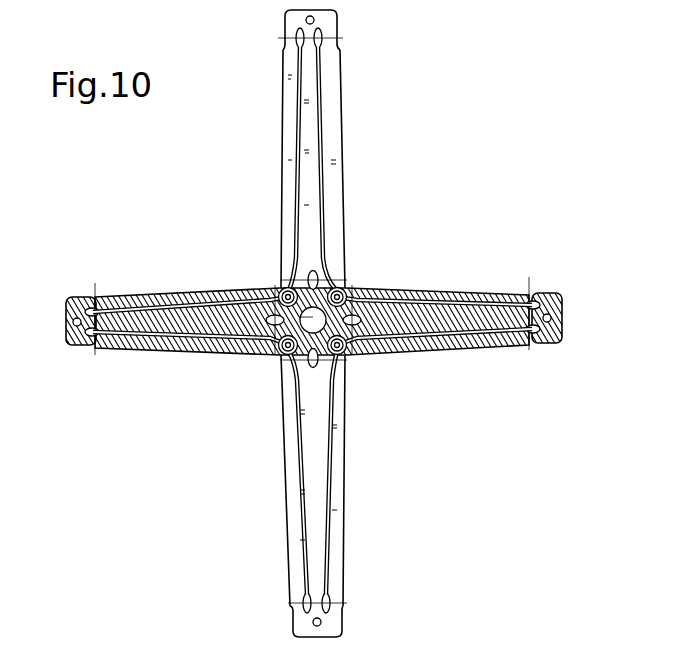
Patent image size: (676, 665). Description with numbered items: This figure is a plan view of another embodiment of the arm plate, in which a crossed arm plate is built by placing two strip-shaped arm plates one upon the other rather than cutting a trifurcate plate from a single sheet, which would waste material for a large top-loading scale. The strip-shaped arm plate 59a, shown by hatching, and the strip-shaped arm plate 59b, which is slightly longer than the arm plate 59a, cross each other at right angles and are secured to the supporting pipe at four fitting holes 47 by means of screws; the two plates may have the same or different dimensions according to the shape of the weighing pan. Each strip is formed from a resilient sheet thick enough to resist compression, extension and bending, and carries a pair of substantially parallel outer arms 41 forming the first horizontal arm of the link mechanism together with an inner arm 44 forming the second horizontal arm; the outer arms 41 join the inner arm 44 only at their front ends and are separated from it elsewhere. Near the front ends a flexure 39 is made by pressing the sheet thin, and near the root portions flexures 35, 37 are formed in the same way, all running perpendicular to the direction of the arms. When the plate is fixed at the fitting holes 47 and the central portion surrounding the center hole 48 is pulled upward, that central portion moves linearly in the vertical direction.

The strip-shaped arm plate 59a is at (438, 289).
The strip-shaped arm plate 59b is at (341, 170).
The flexure 39 is at (296, 40).
The outer arm 41 is at (330, 130).
The inner arm 44 is at (308, 173).
The flexure 37 is at (318, 270).
The flexure 35 is at (283, 276).
The fitting hole 47 is at (282, 287).
The center hole 48 is at (278, 298).